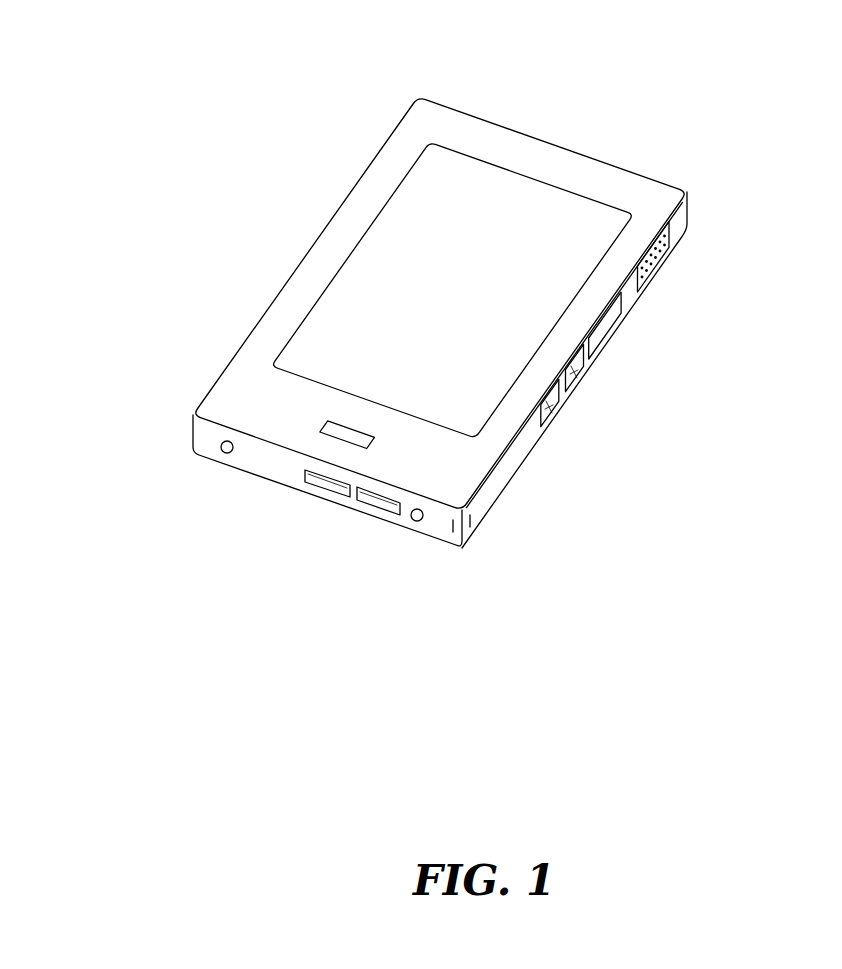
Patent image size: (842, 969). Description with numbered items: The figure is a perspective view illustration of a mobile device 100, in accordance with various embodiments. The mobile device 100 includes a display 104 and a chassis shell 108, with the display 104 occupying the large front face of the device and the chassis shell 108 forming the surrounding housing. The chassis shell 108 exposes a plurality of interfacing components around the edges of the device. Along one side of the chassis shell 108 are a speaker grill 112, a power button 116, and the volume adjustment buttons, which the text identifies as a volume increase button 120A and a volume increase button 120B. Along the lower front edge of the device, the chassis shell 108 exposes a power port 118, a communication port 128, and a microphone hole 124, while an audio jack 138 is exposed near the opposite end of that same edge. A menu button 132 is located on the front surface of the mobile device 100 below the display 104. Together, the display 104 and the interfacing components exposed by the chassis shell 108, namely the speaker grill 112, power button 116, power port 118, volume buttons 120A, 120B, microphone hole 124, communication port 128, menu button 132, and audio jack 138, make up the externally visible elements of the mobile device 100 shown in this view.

The mobile device 100 is at (737, 147).
The display 104 is at (518, 195).
The chassis shell 108 is at (414, 145).
The speaker grill 112 is at (673, 262).
The power button 116 is at (605, 325).
The volume increase button 120A is at (575, 376).
The volume increase button 120B is at (558, 403).
The microphone hole 124 is at (418, 521).
The communication port 128 is at (380, 502).
The menu button 132 is at (330, 442).
The audio jack 138 is at (217, 448).
The power port 118 is at (332, 487).